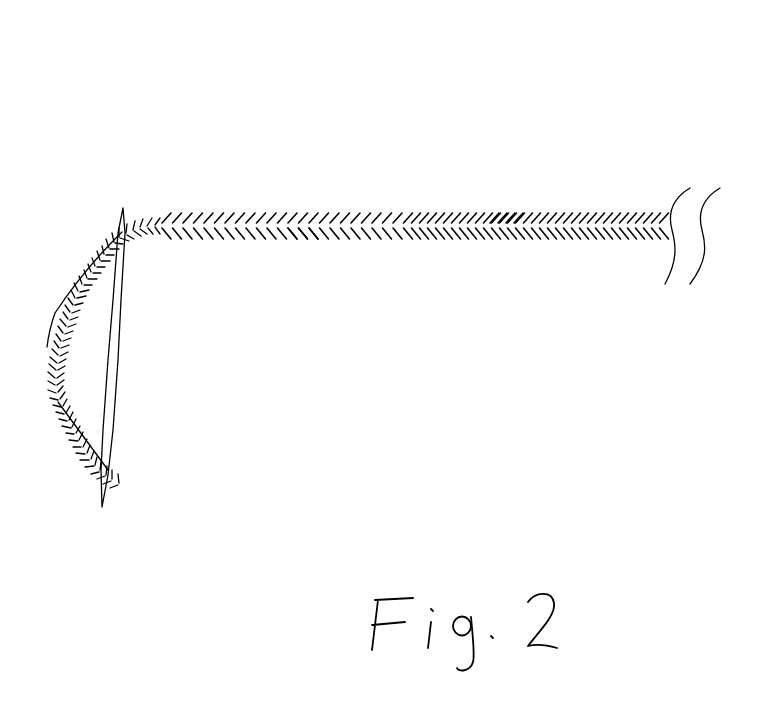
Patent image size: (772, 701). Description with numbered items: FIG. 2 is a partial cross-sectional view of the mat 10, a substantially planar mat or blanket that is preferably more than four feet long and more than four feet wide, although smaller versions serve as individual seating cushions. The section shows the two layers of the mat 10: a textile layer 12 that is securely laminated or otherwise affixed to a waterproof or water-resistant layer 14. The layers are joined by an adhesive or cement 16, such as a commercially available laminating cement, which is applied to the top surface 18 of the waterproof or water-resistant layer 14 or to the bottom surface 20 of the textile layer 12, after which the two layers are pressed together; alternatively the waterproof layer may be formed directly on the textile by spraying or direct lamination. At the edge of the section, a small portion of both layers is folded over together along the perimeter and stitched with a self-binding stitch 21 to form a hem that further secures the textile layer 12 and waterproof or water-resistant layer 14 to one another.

The mat 10 is at (566, 93).
The textile layer 12 is at (334, 211).
The waterproof or water-resistant layer 14 is at (379, 231).
The adhesive or cement 16 is at (294, 228).
The top surface 18 is at (477, 207).
The bottom surface 20 is at (567, 223).
The self-binding stitch 21 is at (118, 370).